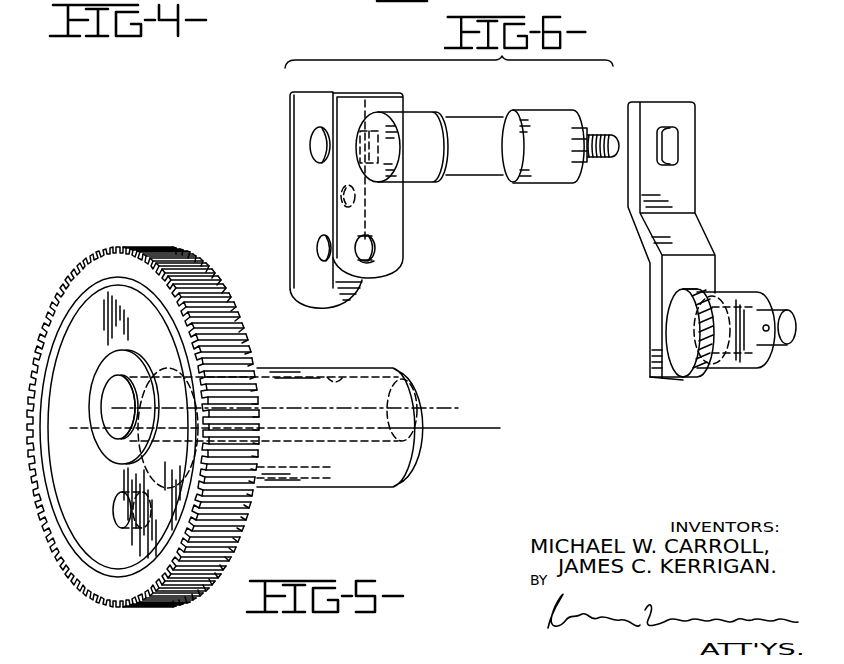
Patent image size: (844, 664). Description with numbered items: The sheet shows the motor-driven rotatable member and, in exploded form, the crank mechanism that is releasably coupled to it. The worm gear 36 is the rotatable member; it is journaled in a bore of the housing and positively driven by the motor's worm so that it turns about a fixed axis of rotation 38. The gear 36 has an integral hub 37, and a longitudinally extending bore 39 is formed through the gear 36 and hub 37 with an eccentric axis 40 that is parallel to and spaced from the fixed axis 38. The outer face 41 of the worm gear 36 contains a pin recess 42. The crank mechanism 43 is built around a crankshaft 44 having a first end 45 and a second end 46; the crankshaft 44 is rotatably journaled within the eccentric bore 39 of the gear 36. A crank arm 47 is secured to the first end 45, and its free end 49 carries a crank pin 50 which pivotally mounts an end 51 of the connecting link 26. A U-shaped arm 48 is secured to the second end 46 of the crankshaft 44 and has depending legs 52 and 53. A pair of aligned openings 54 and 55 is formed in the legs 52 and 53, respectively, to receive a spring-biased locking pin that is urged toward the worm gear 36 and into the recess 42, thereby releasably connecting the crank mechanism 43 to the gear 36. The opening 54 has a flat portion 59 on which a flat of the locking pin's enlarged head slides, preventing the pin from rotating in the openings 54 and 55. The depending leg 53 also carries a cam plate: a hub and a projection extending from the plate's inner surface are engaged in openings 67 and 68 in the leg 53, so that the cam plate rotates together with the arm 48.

In FIG. 6, the connecting link 26 is at (776, 266).
In FIG. 5, the worm gear 36 is at (134, 427).
In FIG. 5, the hub 37 is at (316, 487).
In FIG. 5, the fixed axis of rotation 38 is at (485, 428).
In FIG. 5, the longitudinally extending bore 39 is at (333, 380).
In FIG. 5, the eccentric axis 40 is at (448, 408).
In FIG. 5, the outer face 41 is at (134, 286).
In FIG. 5, the pin recess 42 is at (120, 498).
In FIG. 6, the crank mechanism 43 is at (487, 126).
In FIG. 6, the crankshaft 44 is at (477, 110).
In FIG. 6, the first end 45 is at (557, 92).
In FIG. 6, the second end 46 is at (414, 112).
In FIG. 6, the crank arm 47 is at (704, 260).
In FIG. 6, the U-shaped arm 48 is at (347, 188).
In FIG. 6, the free end 49 is at (665, 383).
In FIG. 6, the crank pin 50 is at (792, 347).
In FIG. 6, the end of connecting link 51 is at (735, 368).
In FIG. 6, the depending leg 52 is at (404, 210).
In FIG. 6, the depending leg 53 is at (290, 222).
In FIG. 6, the opening 54 is at (372, 263).
In FIG. 6, the opening 55 is at (316, 247).
In FIG. 6, the flat portion 59 is at (380, 250).
In FIG. 6, the opening 67 is at (312, 140).
In FIG. 6, the opening 68 is at (340, 193).